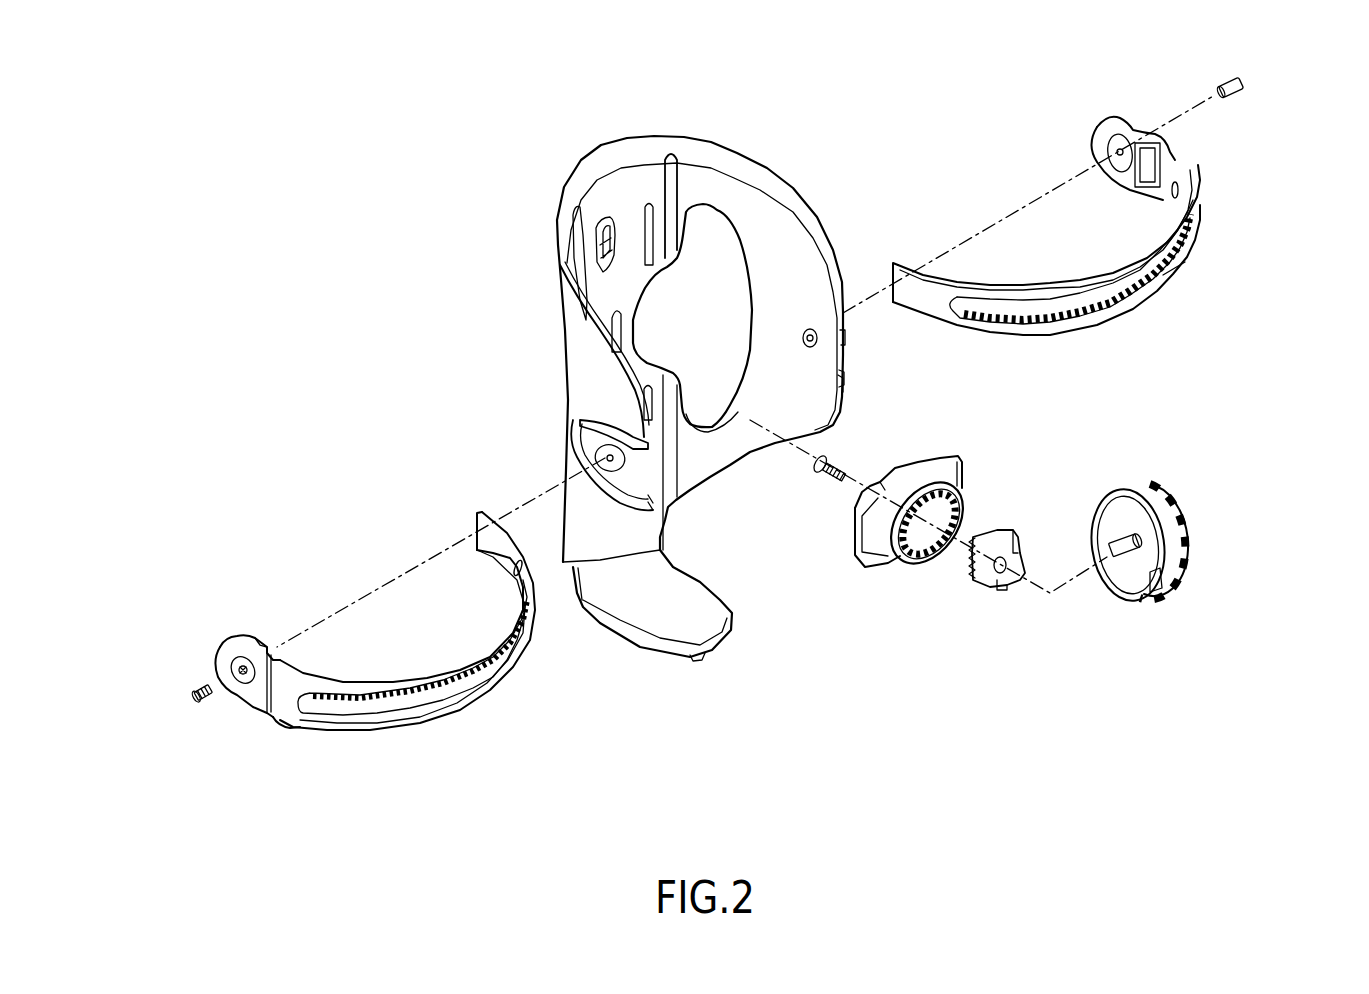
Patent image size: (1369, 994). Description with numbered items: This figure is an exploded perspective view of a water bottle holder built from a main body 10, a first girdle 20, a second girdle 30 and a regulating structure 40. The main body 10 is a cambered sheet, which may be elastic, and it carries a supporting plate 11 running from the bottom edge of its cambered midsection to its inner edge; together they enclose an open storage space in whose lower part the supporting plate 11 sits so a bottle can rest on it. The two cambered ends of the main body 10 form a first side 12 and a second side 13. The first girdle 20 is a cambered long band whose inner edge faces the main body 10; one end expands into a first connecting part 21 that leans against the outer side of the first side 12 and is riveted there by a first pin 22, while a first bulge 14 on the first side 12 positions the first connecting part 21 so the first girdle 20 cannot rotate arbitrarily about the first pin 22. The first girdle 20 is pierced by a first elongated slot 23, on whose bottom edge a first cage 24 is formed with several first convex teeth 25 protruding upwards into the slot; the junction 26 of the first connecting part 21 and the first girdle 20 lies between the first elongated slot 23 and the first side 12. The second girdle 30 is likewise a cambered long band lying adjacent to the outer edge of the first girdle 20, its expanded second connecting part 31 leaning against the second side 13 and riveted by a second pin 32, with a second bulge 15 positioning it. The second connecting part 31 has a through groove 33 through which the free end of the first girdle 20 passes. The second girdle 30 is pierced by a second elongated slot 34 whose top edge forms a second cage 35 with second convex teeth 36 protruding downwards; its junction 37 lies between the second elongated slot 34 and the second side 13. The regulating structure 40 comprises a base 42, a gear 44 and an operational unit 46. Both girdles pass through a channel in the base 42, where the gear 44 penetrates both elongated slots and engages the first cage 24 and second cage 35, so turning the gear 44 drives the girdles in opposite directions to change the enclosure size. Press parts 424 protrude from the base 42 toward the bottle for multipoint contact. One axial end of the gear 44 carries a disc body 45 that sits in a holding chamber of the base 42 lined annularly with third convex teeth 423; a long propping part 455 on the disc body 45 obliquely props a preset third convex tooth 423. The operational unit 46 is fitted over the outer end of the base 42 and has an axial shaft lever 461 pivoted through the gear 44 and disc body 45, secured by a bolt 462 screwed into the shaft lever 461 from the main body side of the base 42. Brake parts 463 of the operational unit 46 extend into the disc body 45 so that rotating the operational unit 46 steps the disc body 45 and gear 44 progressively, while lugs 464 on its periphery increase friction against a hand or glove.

The main body 10 is at (702, 387).
The supporting plate 11 is at (637, 643).
The first side 12 is at (827, 248).
The second side 13 is at (638, 427).
The first bulge 14 is at (843, 383).
The second bulge 15 is at (573, 435).
The first girdle 20 is at (1101, 198).
The first connecting part 21 is at (1110, 121).
The first pin 22 is at (1243, 83).
The first elongated slot 23 is at (1128, 277).
The first cage 24 is at (1153, 293).
The first convex teeth 25 is at (1138, 294).
The junction 26 is at (1200, 167).
The second girdle 30 is at (346, 660).
The second connecting part 31 is at (223, 660).
The second pin 32 is at (192, 700).
The through groove 33 is at (233, 637).
The second elongated slot 34 is at (447, 707).
The second cage 35 is at (421, 682).
The second convex teeth 36 is at (350, 700).
The junction 37 is at (280, 727).
The regulating structure 40 is at (1020, 581).
The base 42 is at (903, 539).
The third convex teeth 423 is at (968, 490).
The press parts 424 is at (843, 493).
The gear 44 is at (1007, 570).
The disc body 45 is at (973, 590).
The propping part 455 is at (1000, 590).
The operational unit 46 is at (1216, 542).
The shaft lever 461 is at (1123, 587).
The bolt 462 is at (827, 472).
The brake parts 463 is at (1177, 585).
The lugs 464 is at (1183, 562).